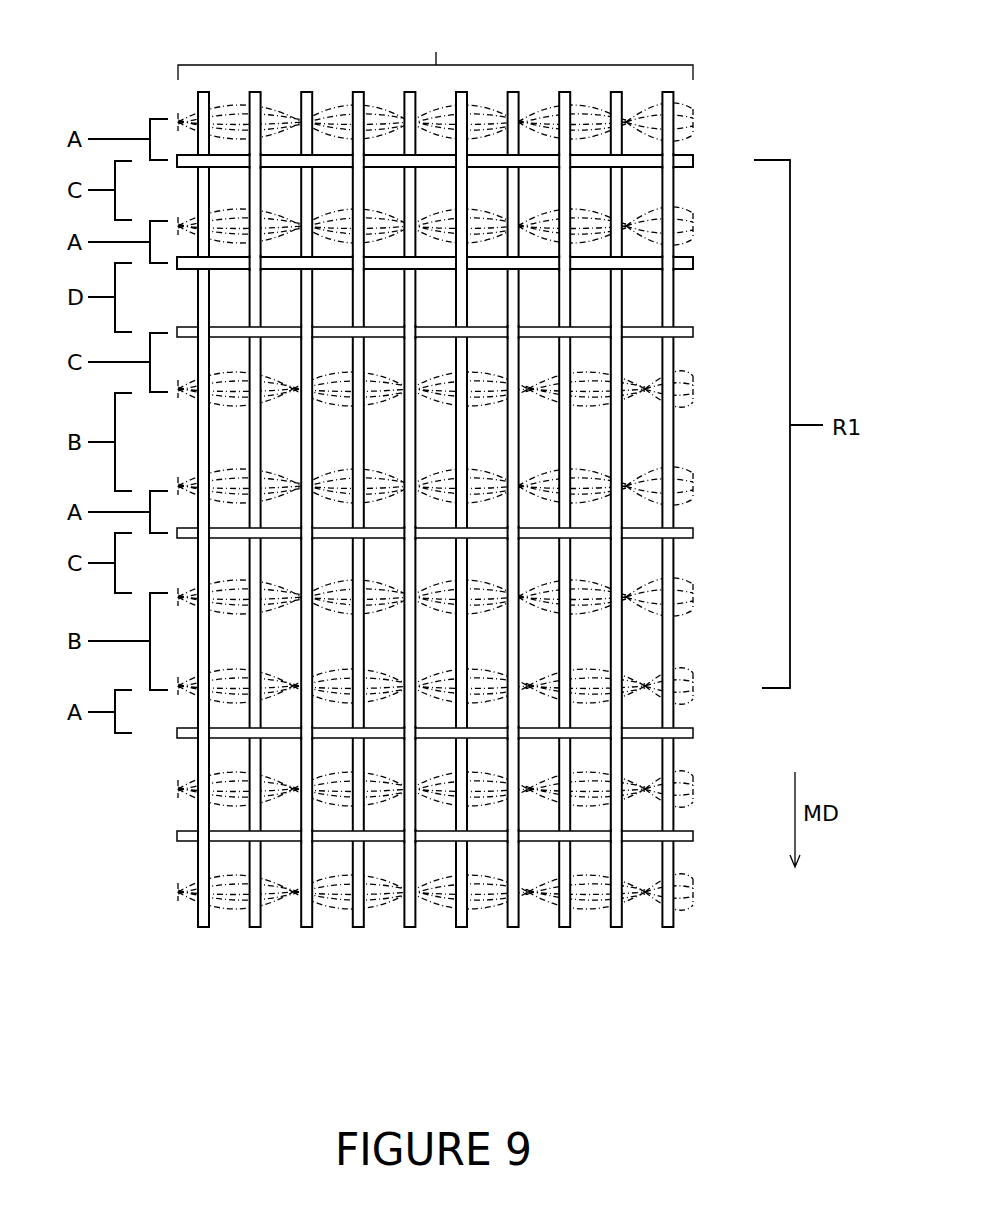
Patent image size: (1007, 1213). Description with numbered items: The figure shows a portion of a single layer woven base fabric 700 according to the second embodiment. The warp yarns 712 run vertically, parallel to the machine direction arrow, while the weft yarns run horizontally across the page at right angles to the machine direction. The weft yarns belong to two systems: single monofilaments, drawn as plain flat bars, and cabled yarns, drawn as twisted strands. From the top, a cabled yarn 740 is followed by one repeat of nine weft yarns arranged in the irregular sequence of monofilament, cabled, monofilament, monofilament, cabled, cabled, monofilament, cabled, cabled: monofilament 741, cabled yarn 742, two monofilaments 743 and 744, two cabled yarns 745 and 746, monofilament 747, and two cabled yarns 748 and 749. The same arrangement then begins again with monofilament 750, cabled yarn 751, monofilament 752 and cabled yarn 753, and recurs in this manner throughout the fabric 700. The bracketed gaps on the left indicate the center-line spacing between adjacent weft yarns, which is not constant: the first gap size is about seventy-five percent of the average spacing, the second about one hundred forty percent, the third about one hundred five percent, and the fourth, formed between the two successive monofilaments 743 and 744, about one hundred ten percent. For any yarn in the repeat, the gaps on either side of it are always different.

The single layer woven base fabric 700 is at (118, 53).
The warp yarns 712 is at (435, 50).
The cabled yarn 740 is at (687, 120).
The monofilament 741 is at (688, 162).
The cabled yarn 742 is at (690, 223).
The monofilament 743 is at (688, 263).
The monofilament 744 is at (688, 333).
The cabled yarn 745 is at (688, 395).
The cabled yarn 746 is at (690, 492).
The monofilament 747 is at (690, 535).
The cabled yarn 748 is at (690, 592).
The cabled yarn 749 is at (686, 682).
The monofilament 750 is at (688, 735).
The cabled yarn 751 is at (688, 795).
The monofilament 752 is at (688, 837).
The cabled yarn 753 is at (686, 900).